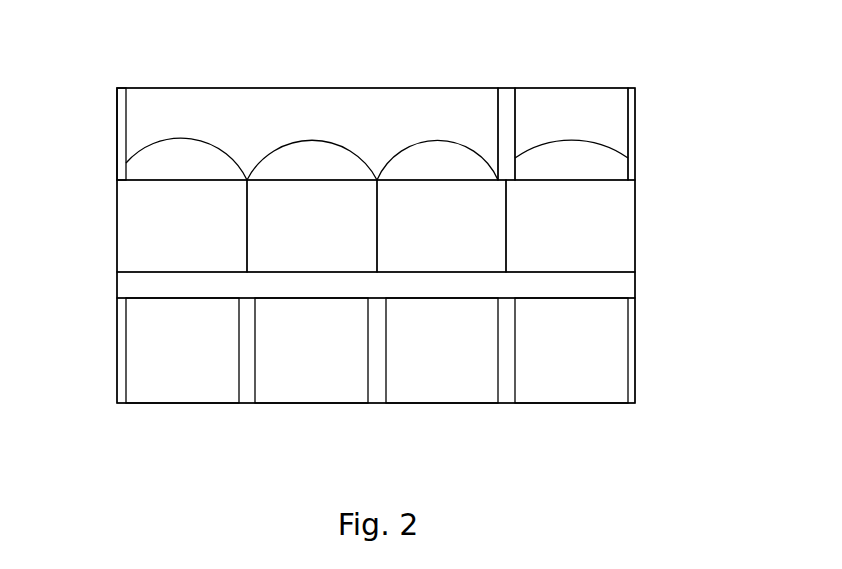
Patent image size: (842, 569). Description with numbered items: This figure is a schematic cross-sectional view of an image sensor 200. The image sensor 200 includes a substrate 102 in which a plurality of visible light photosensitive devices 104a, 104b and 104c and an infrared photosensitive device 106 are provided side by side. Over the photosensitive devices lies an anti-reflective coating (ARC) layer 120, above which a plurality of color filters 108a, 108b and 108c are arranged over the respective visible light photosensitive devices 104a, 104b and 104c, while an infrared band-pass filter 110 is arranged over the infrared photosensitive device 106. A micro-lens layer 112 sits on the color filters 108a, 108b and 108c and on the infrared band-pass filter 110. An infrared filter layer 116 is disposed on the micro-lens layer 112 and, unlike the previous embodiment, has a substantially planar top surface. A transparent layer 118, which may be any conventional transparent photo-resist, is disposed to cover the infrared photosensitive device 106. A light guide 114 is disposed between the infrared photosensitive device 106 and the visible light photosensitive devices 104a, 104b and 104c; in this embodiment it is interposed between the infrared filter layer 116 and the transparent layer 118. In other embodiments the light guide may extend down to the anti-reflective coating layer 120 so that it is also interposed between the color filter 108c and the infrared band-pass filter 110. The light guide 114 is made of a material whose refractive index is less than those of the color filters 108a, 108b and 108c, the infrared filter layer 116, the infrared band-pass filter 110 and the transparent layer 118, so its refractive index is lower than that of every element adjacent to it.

The image sensor 200 is at (642, 30).
The substrate 102 is at (634, 339).
The visible light photosensitive device 104a is at (164, 364).
The visible light photosensitive device 104b is at (287, 364).
The visible light photosensitive device 104c is at (417, 364).
The infrared photosensitive device 106 is at (552, 364).
The anti-reflective coating (ARC) layer 120 is at (620, 288).
The color filter 108a is at (155, 239).
The color filter 108b is at (285, 239).
The color filter 108c is at (415, 239).
The infrared band-pass filter 110 is at (551, 239).
The micro-lens layer 112 is at (162, 168).
The light guide 114 is at (119, 139).
The infrared filter layer 116 is at (291, 127).
The transparent layer 118 is at (543, 127).